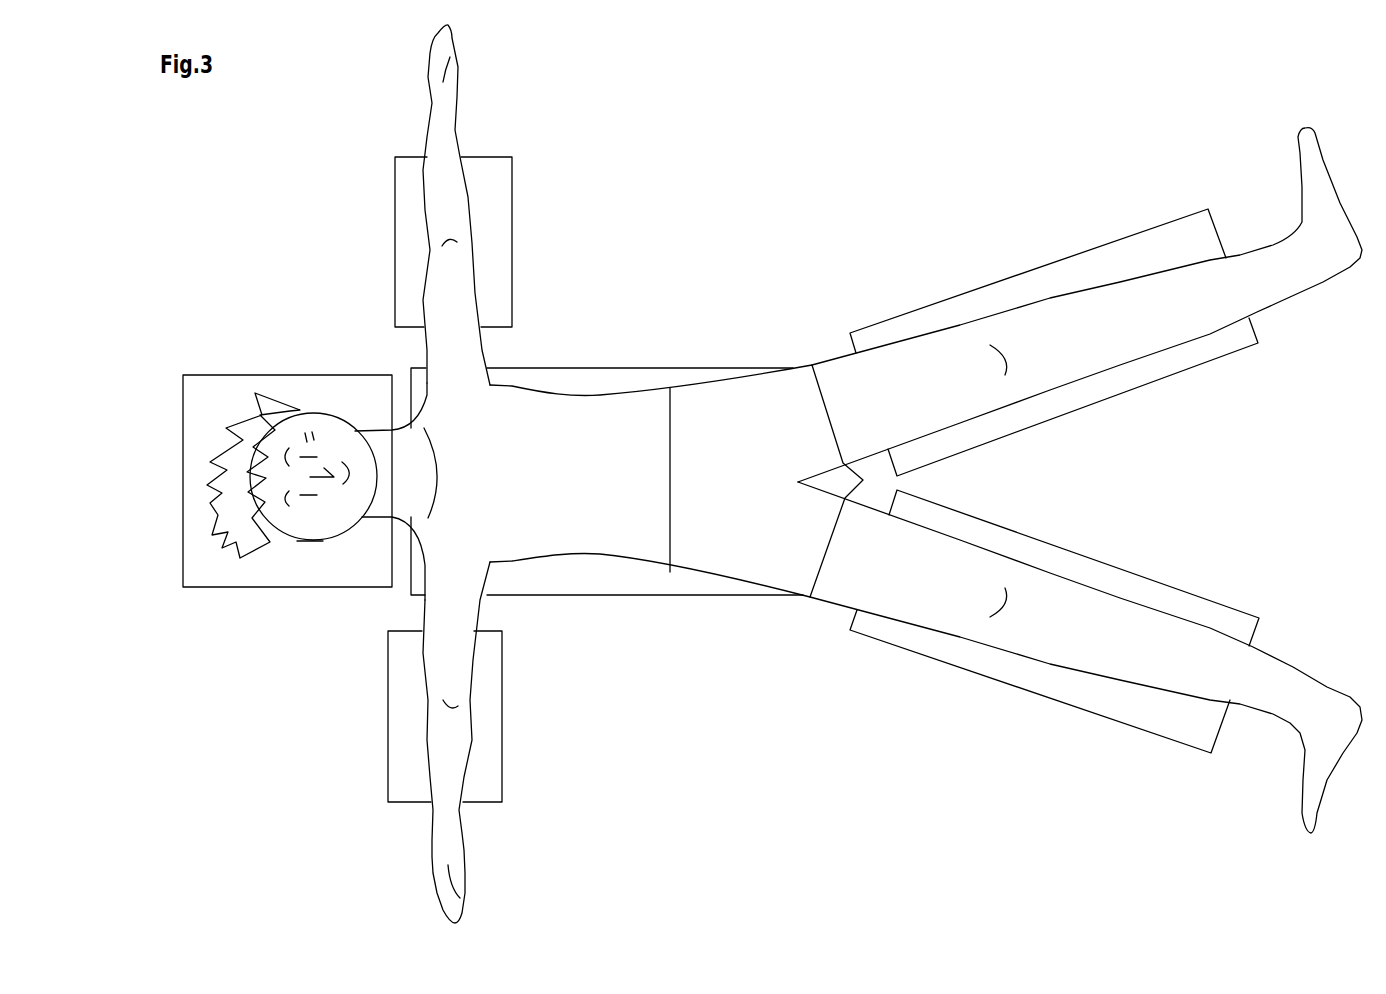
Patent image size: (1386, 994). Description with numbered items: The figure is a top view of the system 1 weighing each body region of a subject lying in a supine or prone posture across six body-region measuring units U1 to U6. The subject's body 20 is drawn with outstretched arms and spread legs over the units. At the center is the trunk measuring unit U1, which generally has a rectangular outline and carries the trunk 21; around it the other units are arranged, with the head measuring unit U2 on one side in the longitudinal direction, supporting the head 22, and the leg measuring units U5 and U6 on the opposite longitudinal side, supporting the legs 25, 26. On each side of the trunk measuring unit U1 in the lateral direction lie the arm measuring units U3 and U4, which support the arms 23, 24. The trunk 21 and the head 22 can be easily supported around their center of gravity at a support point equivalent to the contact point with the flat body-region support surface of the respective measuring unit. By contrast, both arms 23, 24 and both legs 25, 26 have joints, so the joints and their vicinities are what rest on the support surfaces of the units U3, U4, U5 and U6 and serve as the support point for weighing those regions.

The system 1 is at (283, 330).
The human body 20 is at (712, 361).
The trunk 21 is at (612, 503).
The head 22 is at (305, 517).
The arm 23 is at (440, 190).
The arm 24 is at (440, 768).
The leg 25 is at (1150, 312).
The leg 26 is at (1112, 638).
The trunk measuring unit U1 is at (636, 377).
The head measuring unit U2 is at (220, 393).
The arm measuring unit U3 is at (485, 237).
The arm measuring unit U4 is at (497, 715).
The leg measuring unit U5 is at (1048, 285).
The leg measuring unit U6 is at (1032, 675).